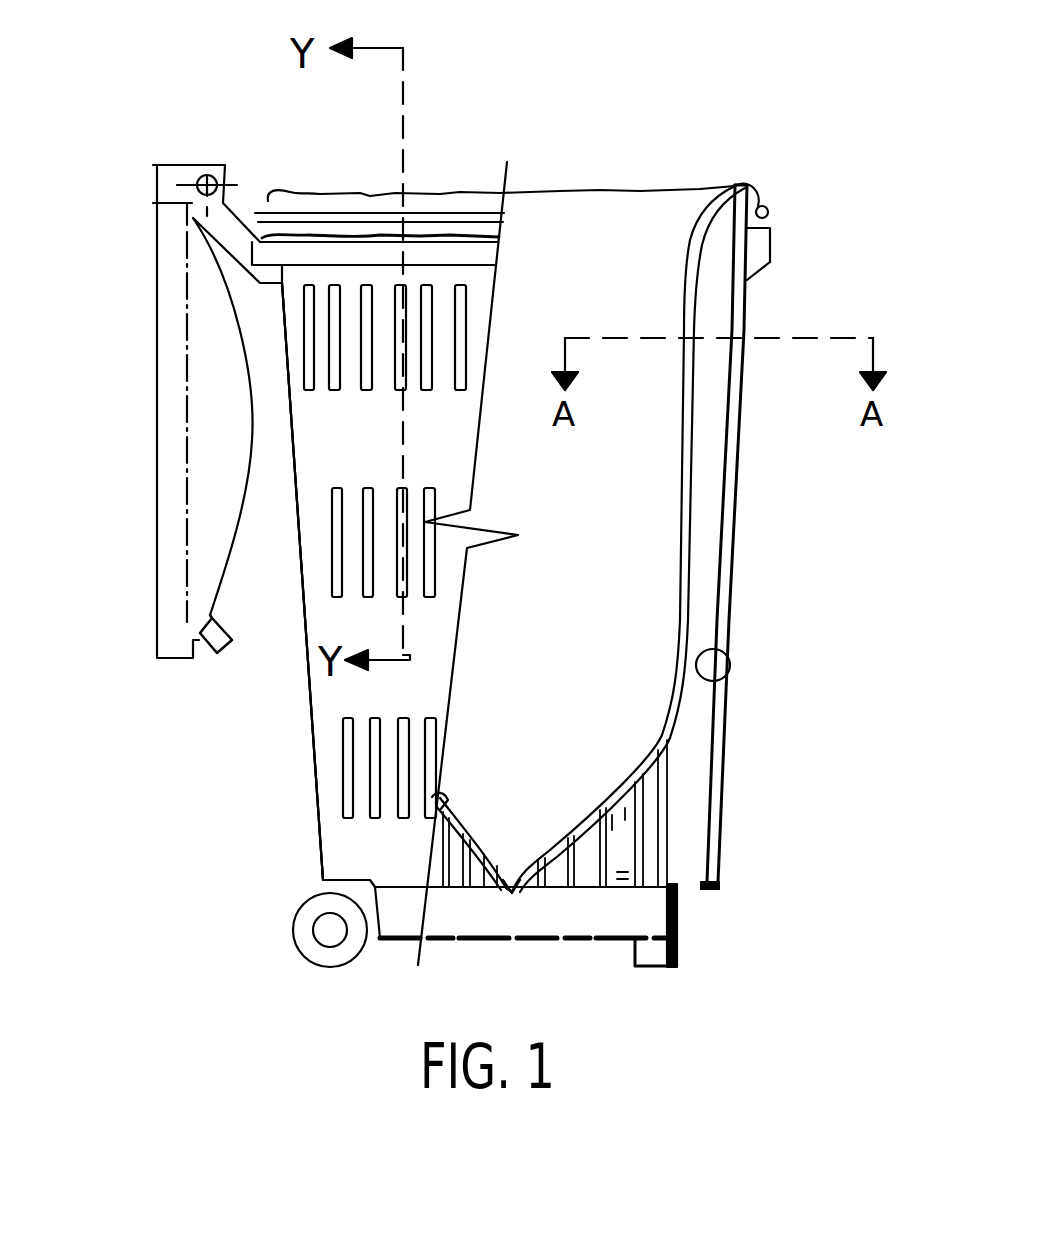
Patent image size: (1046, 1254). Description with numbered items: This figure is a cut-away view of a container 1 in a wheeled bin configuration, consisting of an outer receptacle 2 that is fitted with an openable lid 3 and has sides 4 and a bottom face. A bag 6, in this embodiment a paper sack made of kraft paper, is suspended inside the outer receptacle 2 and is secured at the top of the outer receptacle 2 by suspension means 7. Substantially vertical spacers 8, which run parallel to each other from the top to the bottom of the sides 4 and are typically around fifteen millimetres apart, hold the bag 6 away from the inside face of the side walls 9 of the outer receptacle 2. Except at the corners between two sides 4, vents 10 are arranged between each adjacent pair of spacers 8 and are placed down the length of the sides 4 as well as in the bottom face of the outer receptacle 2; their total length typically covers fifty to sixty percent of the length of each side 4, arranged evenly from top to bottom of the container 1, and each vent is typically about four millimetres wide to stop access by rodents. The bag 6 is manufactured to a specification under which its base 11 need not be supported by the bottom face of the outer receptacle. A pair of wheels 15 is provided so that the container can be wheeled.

The container 1 is at (347, 847).
The outer receptacle 2 is at (313, 757).
The openable lid 3 is at (183, 412).
The sides 4 is at (309, 694).
The bag 6 is at (607, 220).
The suspension means 7 is at (443, 213).
The spacers 8 is at (695, 745).
The side walls 9 is at (722, 680).
The vents 10 is at (370, 575).
The base 11 is at (500, 890).
The wheels 15 is at (330, 930).